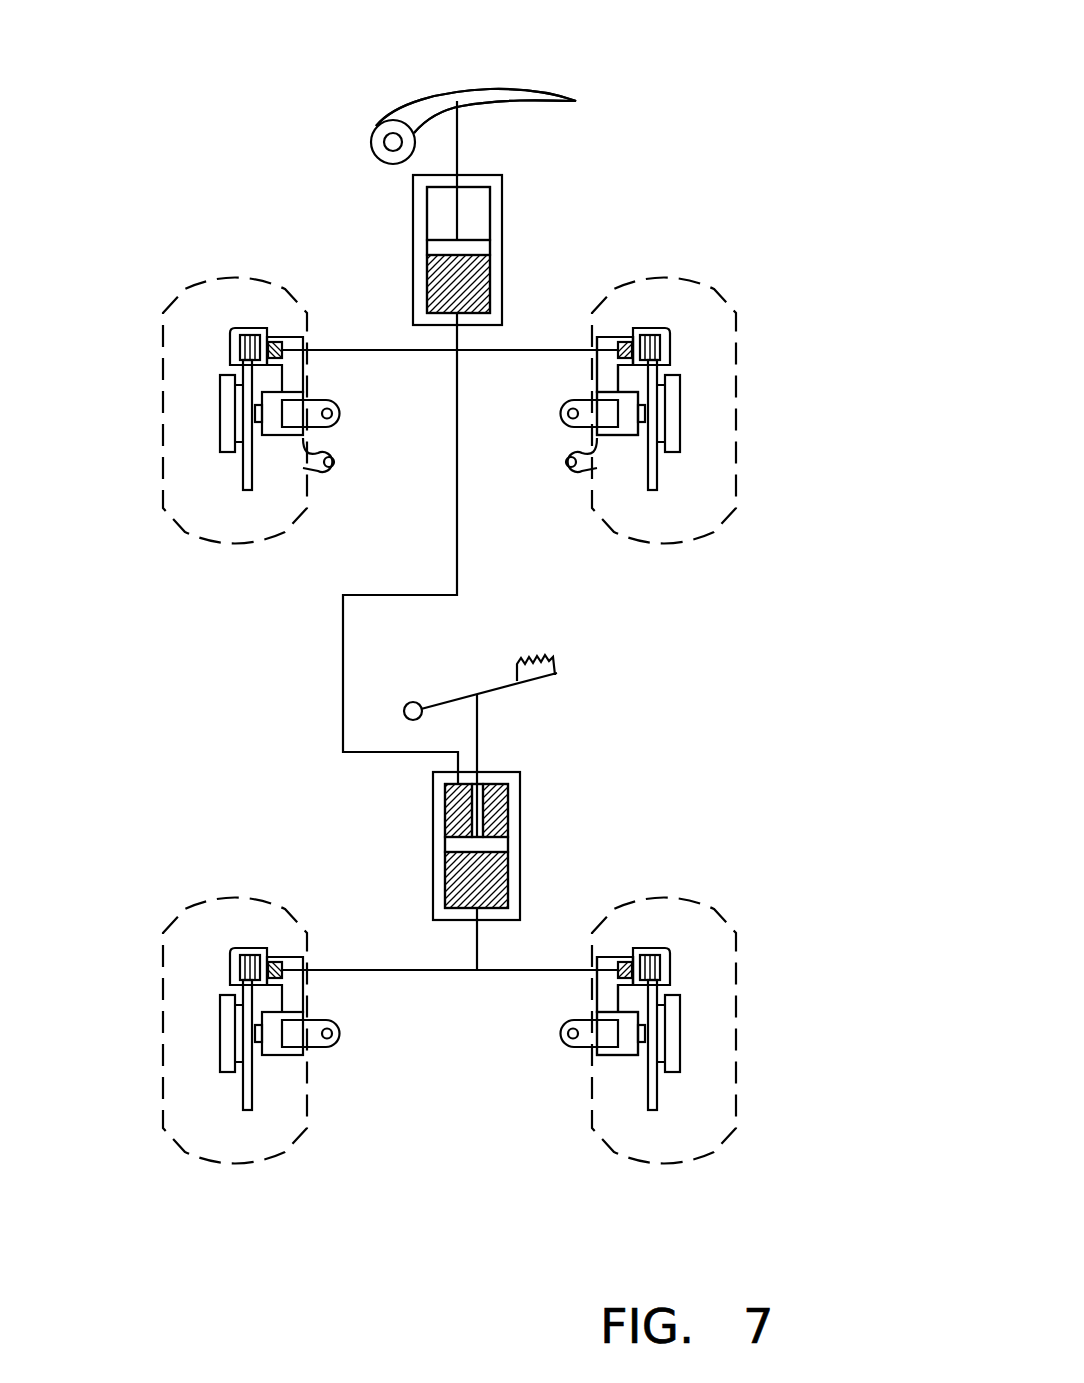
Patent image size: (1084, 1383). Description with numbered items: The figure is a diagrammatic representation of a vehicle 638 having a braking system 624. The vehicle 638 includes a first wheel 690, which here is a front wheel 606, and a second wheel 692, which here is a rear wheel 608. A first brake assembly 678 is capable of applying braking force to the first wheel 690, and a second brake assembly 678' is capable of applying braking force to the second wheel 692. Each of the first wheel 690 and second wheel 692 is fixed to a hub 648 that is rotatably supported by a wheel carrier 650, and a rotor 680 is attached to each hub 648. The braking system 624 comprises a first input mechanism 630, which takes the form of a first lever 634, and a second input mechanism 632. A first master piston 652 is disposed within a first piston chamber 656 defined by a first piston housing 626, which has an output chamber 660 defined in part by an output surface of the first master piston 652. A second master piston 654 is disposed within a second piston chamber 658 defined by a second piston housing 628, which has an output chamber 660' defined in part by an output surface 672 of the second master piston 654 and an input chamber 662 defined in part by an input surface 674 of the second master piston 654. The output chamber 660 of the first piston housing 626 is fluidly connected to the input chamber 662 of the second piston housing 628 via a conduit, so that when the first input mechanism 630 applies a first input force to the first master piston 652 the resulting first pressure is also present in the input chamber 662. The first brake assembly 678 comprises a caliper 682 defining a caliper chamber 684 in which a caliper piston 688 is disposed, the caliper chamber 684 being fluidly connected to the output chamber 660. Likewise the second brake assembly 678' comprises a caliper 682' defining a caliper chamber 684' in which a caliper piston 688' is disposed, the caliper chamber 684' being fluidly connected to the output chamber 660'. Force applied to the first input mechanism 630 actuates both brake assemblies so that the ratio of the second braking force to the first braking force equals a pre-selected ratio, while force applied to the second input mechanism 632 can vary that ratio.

The front wheel 606 is at (717, 517).
The rear wheel 608 is at (735, 1130).
The braking system 624 is at (495, 1165).
The first piston housing 626 is at (418, 212).
The second piston housing 628 is at (517, 880).
The first input mechanism 630 is at (360, 100).
The second input mechanism 632 is at (555, 721).
The first lever 634 is at (493, 96).
The vehicle 638 is at (495, 1205).
The hub 648 is at (672, 410).
The wheel carrier 650 is at (572, 467).
The first master piston 652 is at (463, 250).
The second master piston 654 is at (458, 843).
The first piston chamber 656 is at (475, 214).
The second piston chamber 658 is at (507, 800).
The output chamber 660 is at (385, 278).
The output chamber 660' is at (391, 878).
The input chamber 662 is at (460, 800).
The output surface 672 is at (487, 852).
The input surface 674 is at (487, 828).
The first brake assembly 678 is at (718, 336).
The second brake assembly 678' is at (716, 960).
The rotor 680 is at (650, 490).
The caliper 682 is at (603, 304).
The caliper 682' is at (597, 952).
The caliper chamber 684 is at (559, 373).
The caliper chamber 684' is at (532, 995).
The caliper piston 688 is at (747, 334).
The caliper piston 688' is at (743, 956).
The first wheel 690 is at (678, 277).
The second wheel 692 is at (678, 893).